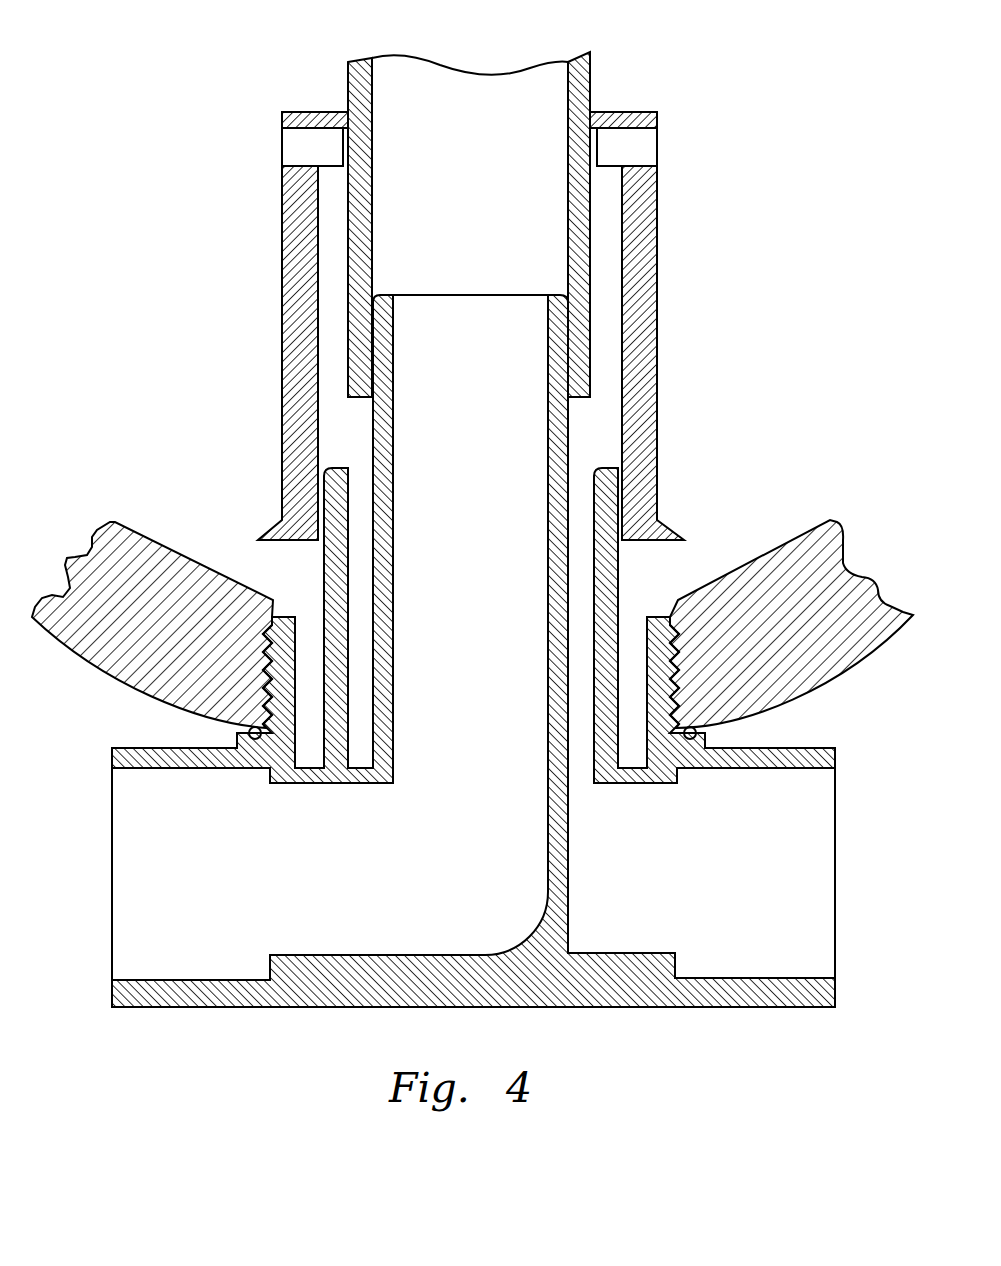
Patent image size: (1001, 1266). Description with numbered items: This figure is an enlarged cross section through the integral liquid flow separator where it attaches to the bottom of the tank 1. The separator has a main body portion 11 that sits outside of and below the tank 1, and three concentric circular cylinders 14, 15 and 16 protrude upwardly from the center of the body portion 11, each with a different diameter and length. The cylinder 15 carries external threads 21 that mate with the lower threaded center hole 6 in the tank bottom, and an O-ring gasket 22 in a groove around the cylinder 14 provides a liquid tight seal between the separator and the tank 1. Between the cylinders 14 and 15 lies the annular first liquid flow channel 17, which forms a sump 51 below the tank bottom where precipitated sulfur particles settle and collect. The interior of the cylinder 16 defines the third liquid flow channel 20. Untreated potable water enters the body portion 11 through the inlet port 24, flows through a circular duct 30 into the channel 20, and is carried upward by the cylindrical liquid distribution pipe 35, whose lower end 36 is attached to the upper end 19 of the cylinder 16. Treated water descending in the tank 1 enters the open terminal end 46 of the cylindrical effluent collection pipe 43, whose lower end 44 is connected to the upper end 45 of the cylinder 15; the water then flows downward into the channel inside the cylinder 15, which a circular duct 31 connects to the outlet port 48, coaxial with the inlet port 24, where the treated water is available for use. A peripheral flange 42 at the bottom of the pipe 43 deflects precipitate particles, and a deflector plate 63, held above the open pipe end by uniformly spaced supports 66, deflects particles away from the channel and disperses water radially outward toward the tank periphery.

The tank 1 is at (88, 666).
The lower threaded center hole 6 is at (678, 605).
The main body portion 11 is at (777, 747).
The cylinder 14 is at (669, 617).
The cylinder 15 is at (622, 557).
The cylinder 16 is at (373, 452).
The first liquid flow channel 17 is at (313, 637).
The upper end of cylinder 16 19 is at (382, 293).
The third liquid flow channel 20 is at (460, 368).
The external threads 21 is at (277, 616).
The O-ring gasket 22 is at (248, 732).
The inlet port 24 is at (110, 757).
The circular duct 30 is at (176, 895).
The circular duct 31 is at (728, 888).
The liquid distribution pipe 35 is at (348, 95).
The lower end of pipe 35 36 is at (350, 390).
The peripheral flange 42 is at (677, 537).
The effluent collection pipe 43 is at (282, 328).
The lower end of pipe 43 44 is at (265, 543).
The upper end of cylinder 15 45 is at (336, 469).
The open terminal end 46 is at (282, 167).
The outlet port 48 is at (835, 756).
The sump 51 is at (637, 635).
The deflector plate 63 is at (627, 112).
The supports 66 is at (282, 147).